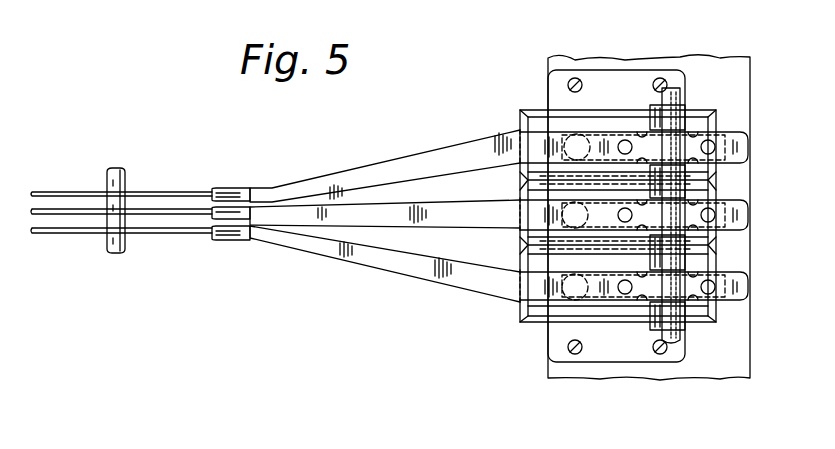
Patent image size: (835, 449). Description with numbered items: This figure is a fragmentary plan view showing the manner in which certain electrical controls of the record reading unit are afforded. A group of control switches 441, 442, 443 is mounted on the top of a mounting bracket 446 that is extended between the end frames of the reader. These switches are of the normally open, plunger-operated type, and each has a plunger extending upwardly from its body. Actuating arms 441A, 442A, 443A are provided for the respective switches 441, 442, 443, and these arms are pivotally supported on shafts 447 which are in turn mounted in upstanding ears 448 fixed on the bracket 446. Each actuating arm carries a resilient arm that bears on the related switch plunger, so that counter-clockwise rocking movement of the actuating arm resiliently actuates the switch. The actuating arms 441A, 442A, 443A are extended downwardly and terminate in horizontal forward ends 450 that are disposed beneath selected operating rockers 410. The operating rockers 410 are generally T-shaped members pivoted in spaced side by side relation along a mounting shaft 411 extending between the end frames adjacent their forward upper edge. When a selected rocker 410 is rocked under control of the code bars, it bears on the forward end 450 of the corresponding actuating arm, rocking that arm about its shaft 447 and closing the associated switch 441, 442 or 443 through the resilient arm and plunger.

The operating rockers 410 is at (167, 233).
The mounting shaft 411 is at (115, 245).
The control switch 441 is at (533, 123).
The actuating arm 441A is at (405, 165).
The control switch 442 is at (527, 235).
The actuating arm 442A is at (395, 215).
The control switch 443 is at (540, 320).
The actuating arm 443A is at (363, 252).
The mounting bracket 446 is at (708, 352).
The shafts 447 is at (675, 97).
The upstanding ears 448 is at (590, 108).
The horizontal forward ends 450 is at (270, 228).